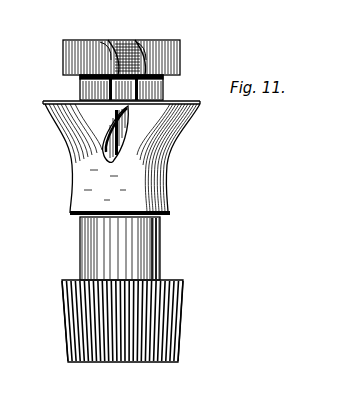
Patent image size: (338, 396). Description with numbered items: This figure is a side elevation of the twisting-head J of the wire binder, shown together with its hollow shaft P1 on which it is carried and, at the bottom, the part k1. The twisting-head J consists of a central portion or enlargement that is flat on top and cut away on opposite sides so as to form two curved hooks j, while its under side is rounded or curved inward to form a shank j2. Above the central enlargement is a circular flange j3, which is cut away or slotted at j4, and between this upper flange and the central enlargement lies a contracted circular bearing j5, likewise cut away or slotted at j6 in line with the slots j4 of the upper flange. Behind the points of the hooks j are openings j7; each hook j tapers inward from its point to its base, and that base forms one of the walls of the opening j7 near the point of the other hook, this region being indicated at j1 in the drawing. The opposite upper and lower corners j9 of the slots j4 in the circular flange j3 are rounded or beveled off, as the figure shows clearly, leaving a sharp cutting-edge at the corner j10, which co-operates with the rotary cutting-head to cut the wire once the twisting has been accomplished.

The twisting-head J is at (185, 106).
The curved hook j is at (103, 157).
The opening in body j1 is at (120, 111).
The shank j2 is at (165, 181).
The circular flange j3 is at (97, 42).
The slot in circular flange j4 is at (136, 42).
The contracted circular bearing j5 is at (82, 86).
The slot in contracted bearing j6 is at (45, 104).
The opening behind hook point j7 is at (171, 140).
The rounded corner of slot j9 is at (105, 42).
The sharp cutting-edge corner j10 is at (63, 63).
The hollow shaft P1 is at (107, 240).
The knurled base k1 is at (182, 297).